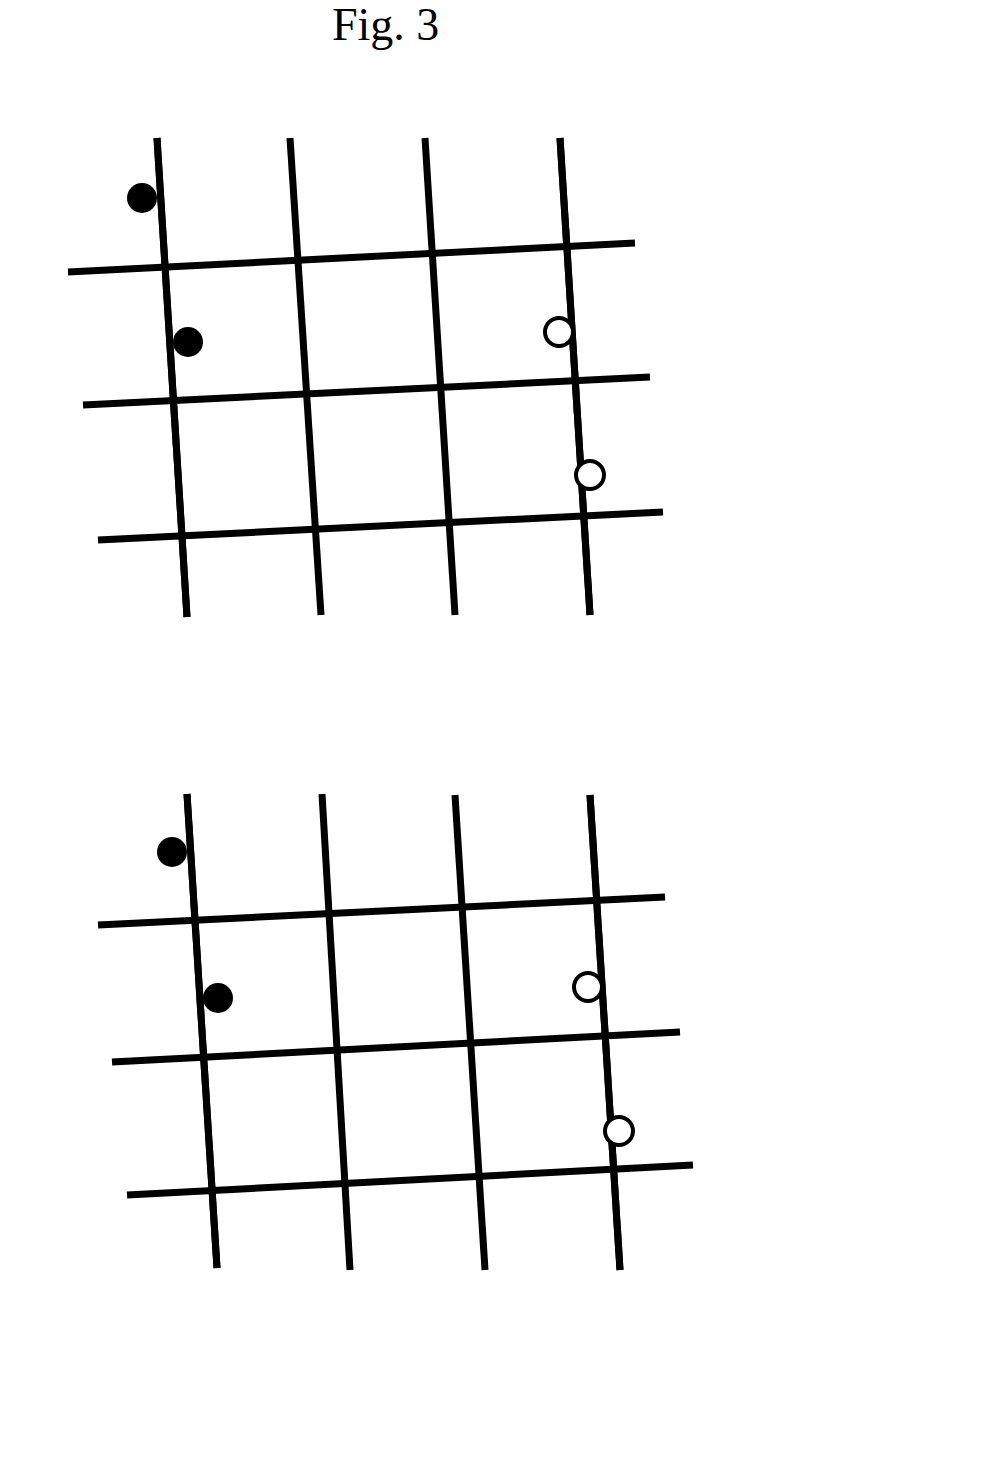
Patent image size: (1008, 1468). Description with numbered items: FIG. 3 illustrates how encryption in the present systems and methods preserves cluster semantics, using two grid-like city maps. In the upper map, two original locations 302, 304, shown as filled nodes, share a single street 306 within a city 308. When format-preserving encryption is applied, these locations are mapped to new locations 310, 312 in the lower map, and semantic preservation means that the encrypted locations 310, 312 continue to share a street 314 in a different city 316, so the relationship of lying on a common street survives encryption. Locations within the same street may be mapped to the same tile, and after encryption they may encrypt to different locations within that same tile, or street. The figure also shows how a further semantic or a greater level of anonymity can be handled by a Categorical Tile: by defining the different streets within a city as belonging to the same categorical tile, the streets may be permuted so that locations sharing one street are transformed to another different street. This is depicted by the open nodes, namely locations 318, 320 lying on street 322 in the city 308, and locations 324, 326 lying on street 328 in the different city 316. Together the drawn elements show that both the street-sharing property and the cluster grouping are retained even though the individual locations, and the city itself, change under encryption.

The location 302 is at (205, 150).
The location 304 is at (283, 279).
The street 306 is at (258, 433).
The city 308 is at (697, 502).
The location 310 is at (235, 805).
The location 312 is at (313, 935).
The street 314 is at (288, 1089).
The city 316 is at (728, 1230).
The location 318 is at (631, 305).
The location 320 is at (655, 441).
The street 322 is at (631, 329).
The location 324 is at (651, 959).
The location 326 is at (682, 1099).
The street 328 is at (661, 984).